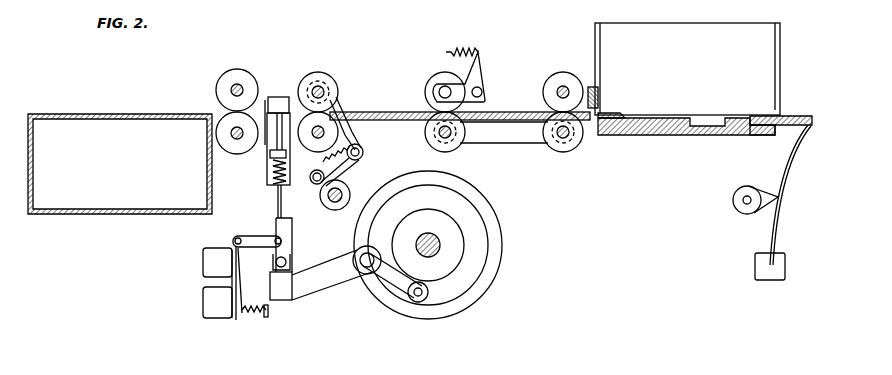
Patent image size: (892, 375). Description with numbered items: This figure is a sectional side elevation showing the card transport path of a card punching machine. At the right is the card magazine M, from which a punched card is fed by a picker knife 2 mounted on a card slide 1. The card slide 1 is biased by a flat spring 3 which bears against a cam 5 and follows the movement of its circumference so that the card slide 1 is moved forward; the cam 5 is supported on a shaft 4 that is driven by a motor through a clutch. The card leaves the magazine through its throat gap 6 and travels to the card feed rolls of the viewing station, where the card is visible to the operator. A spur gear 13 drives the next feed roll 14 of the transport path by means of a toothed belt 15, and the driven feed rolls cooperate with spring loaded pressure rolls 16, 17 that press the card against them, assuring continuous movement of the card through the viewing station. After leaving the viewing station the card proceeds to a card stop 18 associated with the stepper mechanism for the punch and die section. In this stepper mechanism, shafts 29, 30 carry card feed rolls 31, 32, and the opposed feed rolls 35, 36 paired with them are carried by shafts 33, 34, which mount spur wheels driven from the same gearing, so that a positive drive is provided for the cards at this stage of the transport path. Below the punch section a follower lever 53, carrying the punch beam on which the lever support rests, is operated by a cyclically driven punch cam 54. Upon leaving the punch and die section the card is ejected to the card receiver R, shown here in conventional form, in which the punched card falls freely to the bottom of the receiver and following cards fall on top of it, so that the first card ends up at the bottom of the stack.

The card receiver R is at (114, 116).
The card magazine M is at (701, 31).
The card slide 1 is at (808, 116).
The picker knife 2 is at (788, 116).
The flat spring 3 is at (783, 190).
The shaft 4 is at (738, 188).
The cam 5 is at (743, 205).
The throat gap 6 is at (605, 118).
The spur gear 13 is at (552, 145).
The feed roll 14 is at (437, 145).
The toothed belt 15 is at (500, 144).
The pressure roll 16 is at (563, 75).
The pressure roll 17 is at (432, 79).
The card stop 18 is at (266, 150).
The shaft 29 is at (315, 148).
The shaft 30 is at (237, 139).
The card feed roll 31 is at (330, 130).
The card feed roll 32 is at (248, 150).
The shaft 33 is at (320, 86).
The shaft 34 is at (237, 84).
The opposed feed roll 35 is at (337, 90).
The opposed feed roll 36 is at (252, 82).
The follower lever 53 is at (340, 282).
The punch cam 54 is at (468, 297).